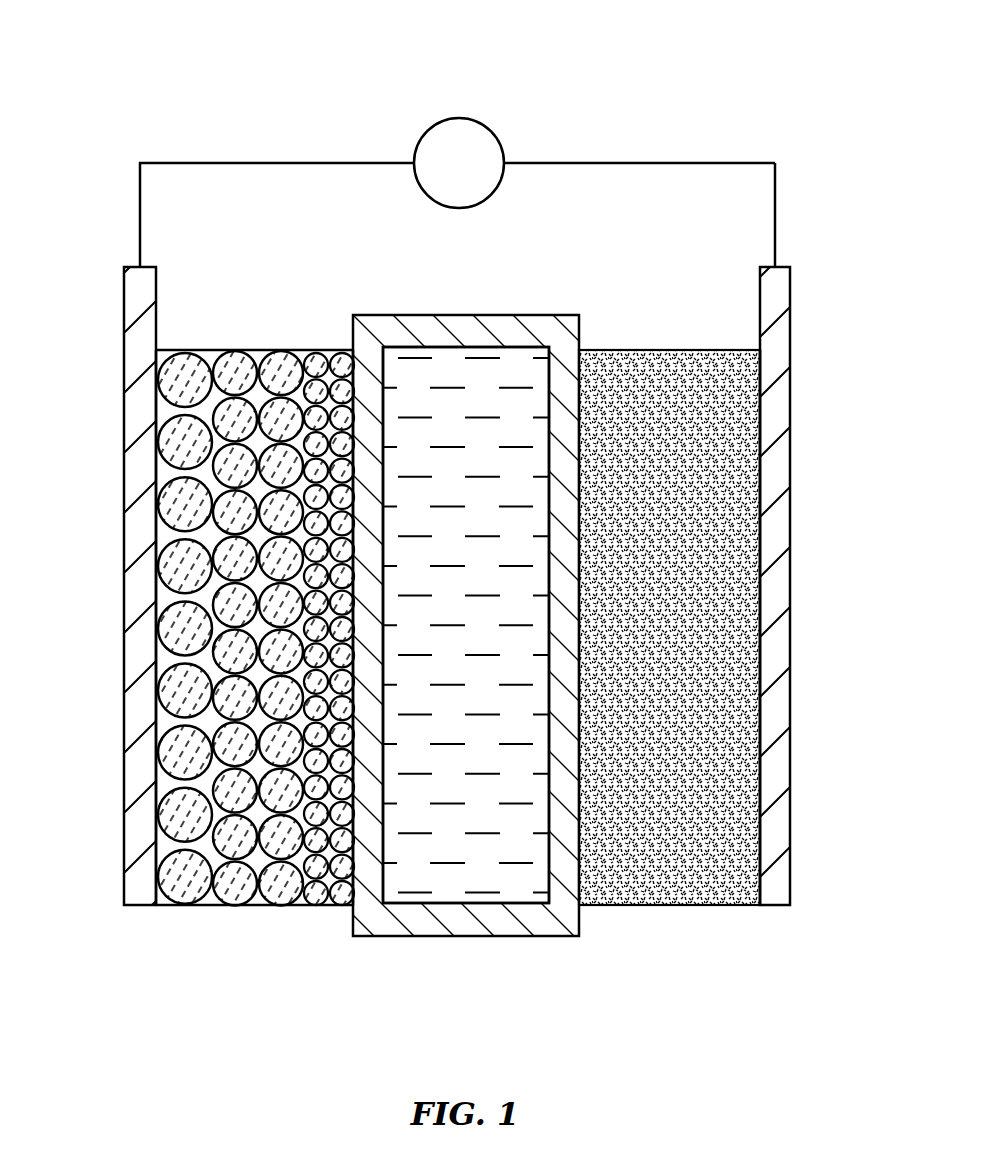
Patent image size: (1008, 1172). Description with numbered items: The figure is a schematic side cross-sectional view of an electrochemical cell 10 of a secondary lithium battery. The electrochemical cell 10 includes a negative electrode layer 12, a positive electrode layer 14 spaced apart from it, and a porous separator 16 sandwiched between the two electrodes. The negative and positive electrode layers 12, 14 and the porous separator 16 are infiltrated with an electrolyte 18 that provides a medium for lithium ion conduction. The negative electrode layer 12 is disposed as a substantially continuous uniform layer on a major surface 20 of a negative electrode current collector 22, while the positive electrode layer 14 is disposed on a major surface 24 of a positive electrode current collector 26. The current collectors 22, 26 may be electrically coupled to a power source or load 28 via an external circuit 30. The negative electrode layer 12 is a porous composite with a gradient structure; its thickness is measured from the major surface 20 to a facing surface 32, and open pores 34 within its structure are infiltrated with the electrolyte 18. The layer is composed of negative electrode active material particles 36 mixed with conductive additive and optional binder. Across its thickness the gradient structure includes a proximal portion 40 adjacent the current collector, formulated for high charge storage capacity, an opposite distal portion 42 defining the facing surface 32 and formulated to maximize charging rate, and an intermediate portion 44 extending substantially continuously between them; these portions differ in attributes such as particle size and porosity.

The electrochemical cell 10 is at (160, 138).
The negative electrode layer 12 is at (198, 350).
The positive electrode layer 14 is at (673, 905).
The porous separator 16 is at (458, 937).
The electrolyte 18 is at (465, 347).
The major surface 20 is at (155, 668).
The negative electrode current collector 22 is at (124, 440).
The major surface 24 is at (762, 652).
The positive electrode current collector 26 is at (790, 470).
The power source or load 28 is at (459, 163).
The external circuit 30 is at (775, 188).
The facing surface 32 is at (356, 383).
The open pores 34 is at (203, 780).
The negative electrode active material particles 36 is at (165, 541).
The proximal portion 40 is at (132, 668).
The distal portion 42 is at (302, 918).
The intermediate portion 44 is at (302, 918).